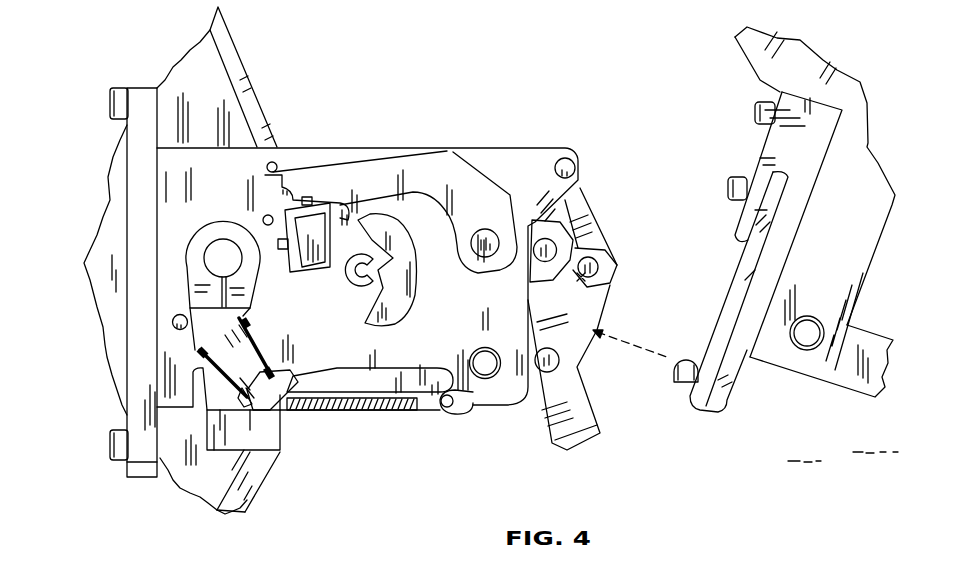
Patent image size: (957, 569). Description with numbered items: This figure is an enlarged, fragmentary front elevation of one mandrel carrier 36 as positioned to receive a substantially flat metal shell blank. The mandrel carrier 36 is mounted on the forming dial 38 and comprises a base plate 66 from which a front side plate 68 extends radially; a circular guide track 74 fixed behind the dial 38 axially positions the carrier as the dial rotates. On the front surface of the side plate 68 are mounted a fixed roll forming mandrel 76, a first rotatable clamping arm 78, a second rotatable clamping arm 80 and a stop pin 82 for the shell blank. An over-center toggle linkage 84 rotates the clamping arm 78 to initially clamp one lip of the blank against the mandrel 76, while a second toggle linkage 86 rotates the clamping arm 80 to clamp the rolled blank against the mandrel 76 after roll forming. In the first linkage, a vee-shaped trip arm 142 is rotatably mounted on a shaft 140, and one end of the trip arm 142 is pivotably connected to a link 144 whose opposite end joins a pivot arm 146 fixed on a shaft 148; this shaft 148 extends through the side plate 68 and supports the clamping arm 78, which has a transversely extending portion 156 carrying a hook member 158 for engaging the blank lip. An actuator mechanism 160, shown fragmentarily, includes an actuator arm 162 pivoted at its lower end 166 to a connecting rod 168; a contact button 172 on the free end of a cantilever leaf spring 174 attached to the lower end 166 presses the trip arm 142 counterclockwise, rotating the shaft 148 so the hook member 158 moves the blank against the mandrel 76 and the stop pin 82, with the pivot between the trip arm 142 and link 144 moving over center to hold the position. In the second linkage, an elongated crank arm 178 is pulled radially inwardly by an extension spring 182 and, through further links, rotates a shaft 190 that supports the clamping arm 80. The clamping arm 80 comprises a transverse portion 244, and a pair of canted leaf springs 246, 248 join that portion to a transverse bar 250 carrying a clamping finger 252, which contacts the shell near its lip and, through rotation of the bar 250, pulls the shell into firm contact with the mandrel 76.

The mandrel carrier 36 is at (357, 279).
The forming dial 38 is at (110, 207).
The base plate 66 is at (142, 97).
The front side plate 68 is at (532, 170).
The circular guide track 74 is at (235, 48).
The fixed roll forming mandrel 76 is at (403, 293).
The first rotatable clamping arm 78 is at (442, 168).
The second rotatable clamping arm 80 is at (247, 307).
The stop pin 82 is at (571, 161).
The over-center toggle linkage 84 is at (604, 411).
The toggle linkage 86 is at (611, 277).
The shaft 140 is at (557, 358).
The vee-shaped trip arm 142 is at (545, 427).
The link 144 is at (580, 278).
The pivot arm 146 is at (573, 227).
The shaft 148 is at (493, 257).
The transversely extending portion 156 is at (320, 263).
The hook member 158 is at (330, 198).
The actuator mechanism 160 is at (872, 305).
The actuator arm 162 is at (868, 202).
The lower end 166 is at (792, 357).
The connecting rod 168 is at (843, 392).
The contact button 172 is at (678, 370).
The cantilever leaf spring 174 is at (732, 300).
The elongated crank arm 178 is at (457, 410).
The extension spring 182 is at (393, 412).
The shaft 190 is at (232, 248).
The transverse portion 244 is at (200, 332).
The canted leaf spring 246 is at (250, 340).
The canted leaf spring 248 is at (187, 462).
The transverse bar 250 is at (233, 487).
The clamping finger 252 is at (323, 410).